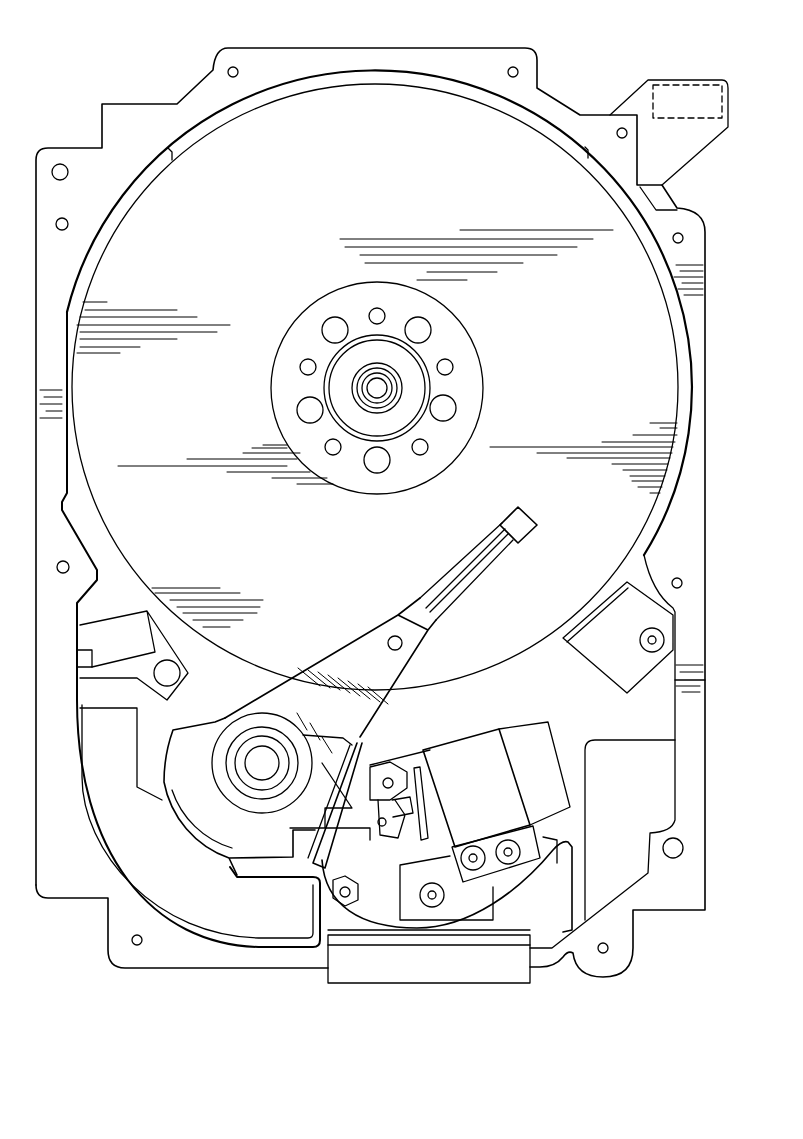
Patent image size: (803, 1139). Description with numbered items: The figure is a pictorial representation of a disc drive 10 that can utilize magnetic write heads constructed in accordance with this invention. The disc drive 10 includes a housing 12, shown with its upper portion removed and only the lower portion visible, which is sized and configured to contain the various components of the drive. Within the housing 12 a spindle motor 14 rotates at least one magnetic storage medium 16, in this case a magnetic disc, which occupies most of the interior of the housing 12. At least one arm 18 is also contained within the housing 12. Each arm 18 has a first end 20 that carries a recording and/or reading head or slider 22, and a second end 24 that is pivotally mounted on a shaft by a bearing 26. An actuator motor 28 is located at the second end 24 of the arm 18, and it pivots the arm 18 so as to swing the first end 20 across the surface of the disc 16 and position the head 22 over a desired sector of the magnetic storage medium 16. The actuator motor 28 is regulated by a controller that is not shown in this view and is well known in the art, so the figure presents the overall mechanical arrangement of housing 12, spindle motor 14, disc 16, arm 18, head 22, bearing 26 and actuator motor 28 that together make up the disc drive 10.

The disc drive 10 is at (80, 88).
The housing 12 is at (497, 60).
The spindle motor 14 is at (370, 392).
The magnetic storage medium 16 is at (375, 387).
The arm 18 is at (365, 653).
The first end 20 is at (470, 553).
The head or slider 22 is at (522, 522).
The second end 24 is at (284, 708).
The bearing 26 is at (254, 757).
The actuator motor 28 is at (124, 789).